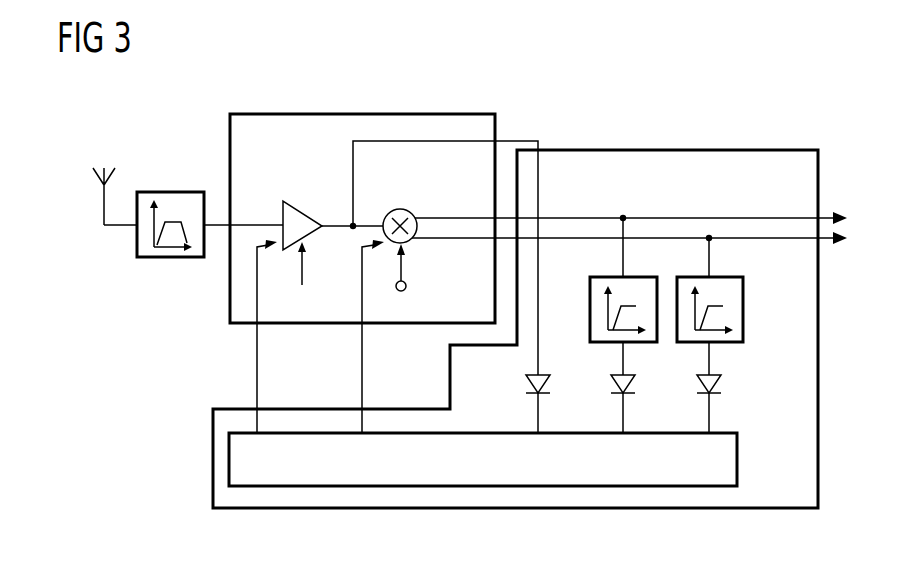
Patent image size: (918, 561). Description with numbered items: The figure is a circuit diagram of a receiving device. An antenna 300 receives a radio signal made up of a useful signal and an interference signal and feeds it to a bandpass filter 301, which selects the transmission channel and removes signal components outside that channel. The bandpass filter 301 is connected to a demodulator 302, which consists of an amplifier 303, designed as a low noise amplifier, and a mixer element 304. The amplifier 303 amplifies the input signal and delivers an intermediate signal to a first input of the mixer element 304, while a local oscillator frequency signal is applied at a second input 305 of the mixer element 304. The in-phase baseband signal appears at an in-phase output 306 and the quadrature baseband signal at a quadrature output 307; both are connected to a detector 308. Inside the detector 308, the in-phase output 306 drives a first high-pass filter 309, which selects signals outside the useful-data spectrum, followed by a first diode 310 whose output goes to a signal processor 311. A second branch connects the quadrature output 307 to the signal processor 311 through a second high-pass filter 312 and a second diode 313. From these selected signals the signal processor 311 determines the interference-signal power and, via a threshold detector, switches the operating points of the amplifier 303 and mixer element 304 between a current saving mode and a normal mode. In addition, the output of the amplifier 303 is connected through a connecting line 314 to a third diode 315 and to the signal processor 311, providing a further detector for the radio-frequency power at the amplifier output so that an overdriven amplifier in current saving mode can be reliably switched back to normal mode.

The antenna 300 is at (100, 182).
The bandpass filter 301 is at (170, 192).
The demodulator 302 is at (360, 114).
The amplifier 303 is at (320, 191).
The mixer element 304 is at (398, 209).
The second input of the mixer element 305 is at (414, 286).
The in-phase output 306 is at (722, 216).
The quadrature output 307 is at (572, 240).
The detector 308 is at (667, 148).
The first high-pass filter 309 is at (603, 345).
The first diode 310 is at (640, 386).
The signal processor 311 is at (738, 462).
The second high-pass filter 312 is at (745, 308).
The second diode 313 is at (725, 386).
The connecting line 314 is at (513, 139).
The third diode 315 is at (524, 386).